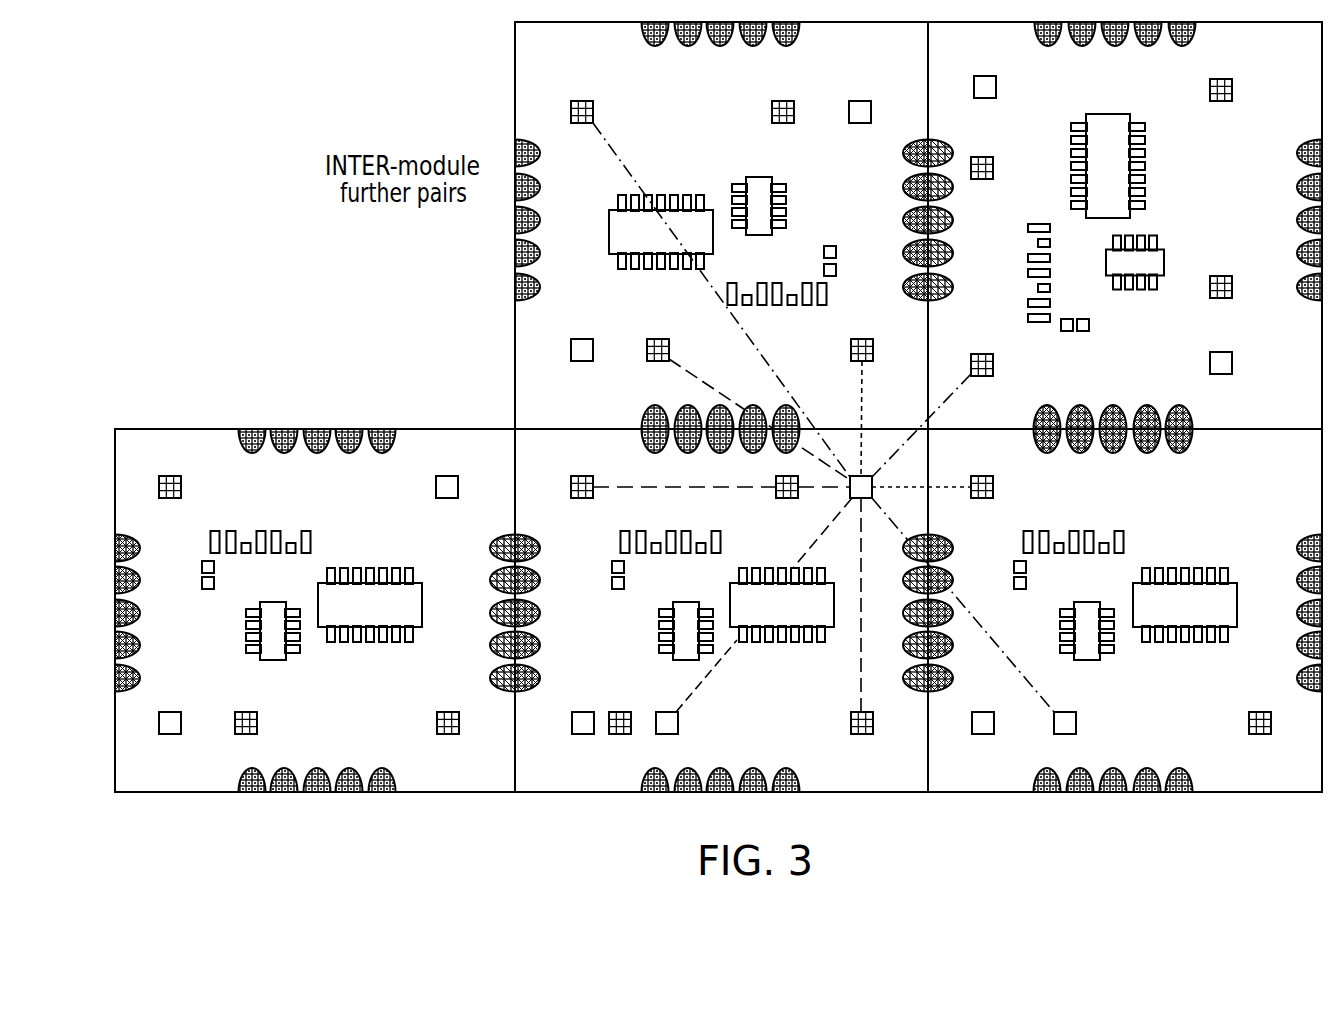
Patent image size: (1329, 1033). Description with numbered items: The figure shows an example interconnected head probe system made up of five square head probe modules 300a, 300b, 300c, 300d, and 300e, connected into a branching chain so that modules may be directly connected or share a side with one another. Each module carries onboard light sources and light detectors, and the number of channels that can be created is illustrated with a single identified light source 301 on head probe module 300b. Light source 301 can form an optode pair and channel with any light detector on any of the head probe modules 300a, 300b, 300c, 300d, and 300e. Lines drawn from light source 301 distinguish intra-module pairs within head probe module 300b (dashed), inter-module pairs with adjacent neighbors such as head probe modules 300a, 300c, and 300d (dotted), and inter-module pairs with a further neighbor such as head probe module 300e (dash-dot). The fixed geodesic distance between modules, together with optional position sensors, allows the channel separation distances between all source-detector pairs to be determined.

The head probe module 300a is at (188, 782).
The head probe module 300b is at (734, 598).
The head probe module 300c is at (1300, 782).
The head probe module 300d is at (592, 63).
The head probe module 300e is at (1300, 63).
The light source 301 is at (853, 494).